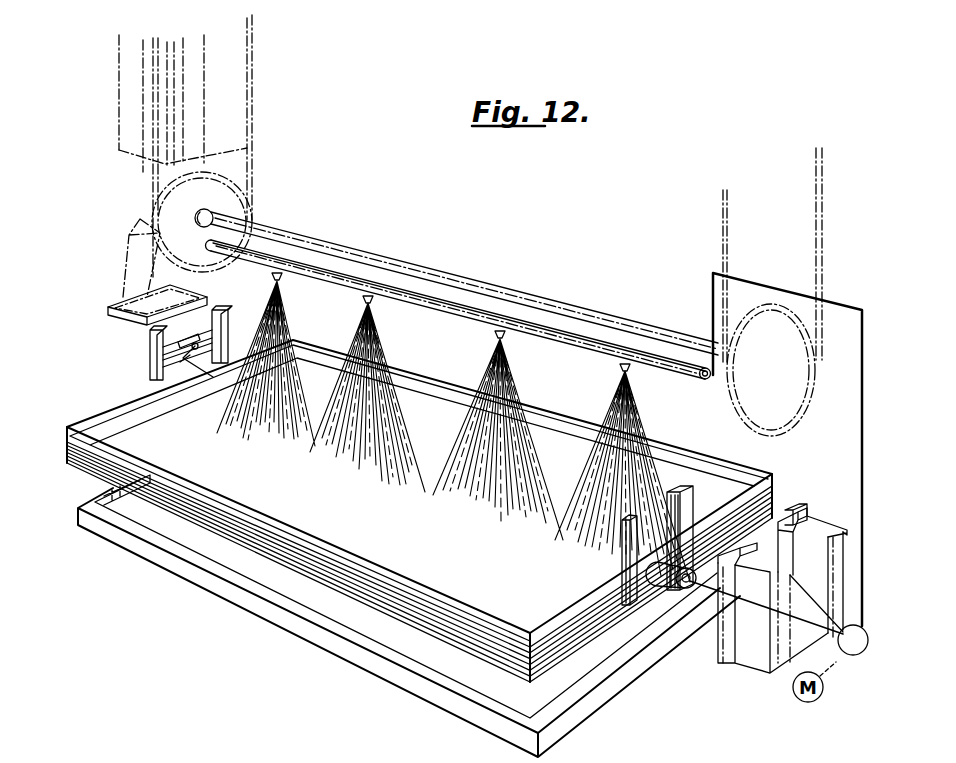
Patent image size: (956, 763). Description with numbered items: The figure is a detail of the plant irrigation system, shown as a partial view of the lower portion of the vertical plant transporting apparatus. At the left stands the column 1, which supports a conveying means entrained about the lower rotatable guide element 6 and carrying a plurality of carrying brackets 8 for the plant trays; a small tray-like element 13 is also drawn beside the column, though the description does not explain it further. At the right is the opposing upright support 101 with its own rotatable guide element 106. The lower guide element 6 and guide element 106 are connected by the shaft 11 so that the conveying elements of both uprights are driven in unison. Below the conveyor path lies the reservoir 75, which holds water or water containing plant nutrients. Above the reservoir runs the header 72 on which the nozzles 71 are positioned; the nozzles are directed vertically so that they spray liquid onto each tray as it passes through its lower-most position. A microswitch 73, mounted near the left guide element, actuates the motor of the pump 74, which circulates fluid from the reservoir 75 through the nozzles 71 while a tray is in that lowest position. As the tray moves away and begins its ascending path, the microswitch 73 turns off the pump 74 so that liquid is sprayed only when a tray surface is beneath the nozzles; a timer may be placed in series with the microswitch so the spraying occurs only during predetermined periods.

The column 1 is at (118, 103).
The rotatable guide element 6 is at (240, 193).
The carrying brackets 8 is at (140, 219).
The shaft 11 is at (442, 270).
The collecting tray 13 is at (128, 320).
The nozzles 71 is at (281, 277).
The header 72 is at (335, 276).
The microswitch 73 is at (190, 332).
The pump 74 is at (855, 656).
The reservoir 75 is at (483, 575).
The upright support 101 is at (748, 662).
The rotatable guide element 106 is at (812, 372).